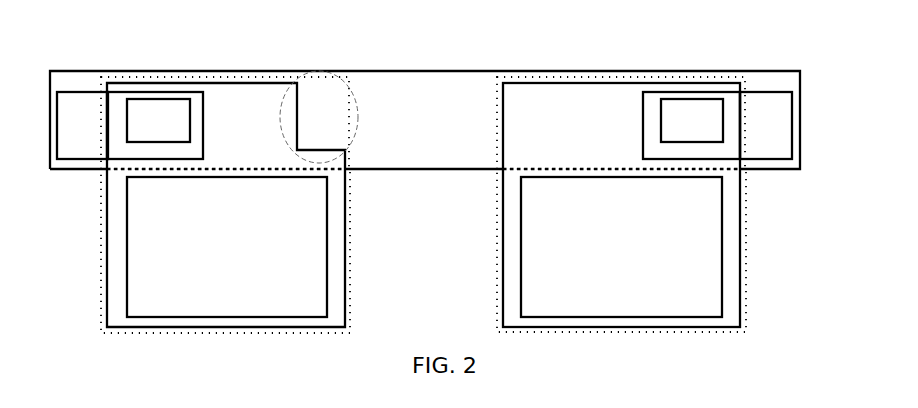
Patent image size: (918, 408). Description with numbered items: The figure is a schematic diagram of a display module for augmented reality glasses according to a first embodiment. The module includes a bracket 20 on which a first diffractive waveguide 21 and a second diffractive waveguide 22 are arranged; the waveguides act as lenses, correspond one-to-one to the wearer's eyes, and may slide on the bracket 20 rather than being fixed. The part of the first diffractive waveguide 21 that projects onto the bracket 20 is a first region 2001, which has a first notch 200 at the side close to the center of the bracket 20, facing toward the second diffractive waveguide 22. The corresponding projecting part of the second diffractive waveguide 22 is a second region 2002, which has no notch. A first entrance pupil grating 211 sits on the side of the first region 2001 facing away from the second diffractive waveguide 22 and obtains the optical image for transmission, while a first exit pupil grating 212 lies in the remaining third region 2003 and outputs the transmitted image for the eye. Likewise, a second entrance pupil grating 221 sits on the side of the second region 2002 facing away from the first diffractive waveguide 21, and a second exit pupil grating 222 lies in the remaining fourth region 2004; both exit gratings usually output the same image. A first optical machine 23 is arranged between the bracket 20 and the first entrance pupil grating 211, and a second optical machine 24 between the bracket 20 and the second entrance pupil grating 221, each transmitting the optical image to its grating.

The bracket 20 is at (445, 71).
The first notch 200 is at (333, 74).
The first region 2001 is at (100, 147).
The second region 2002 is at (745, 145).
The third region 2003 is at (101, 229).
The fourth region 2004 is at (747, 238).
The first diffractive waveguide 21 is at (248, 83).
The first entrance pupil grating 211 is at (158, 99).
The first exit pupil grating 212 is at (327, 208).
The second diffractive waveguide 22 is at (605, 83).
The second entrance pupil grating 221 is at (673, 99).
The second exit pupil grating 222 is at (521, 210).
The first optical machine 23 is at (80, 92).
The second optical machine 24 is at (752, 92).